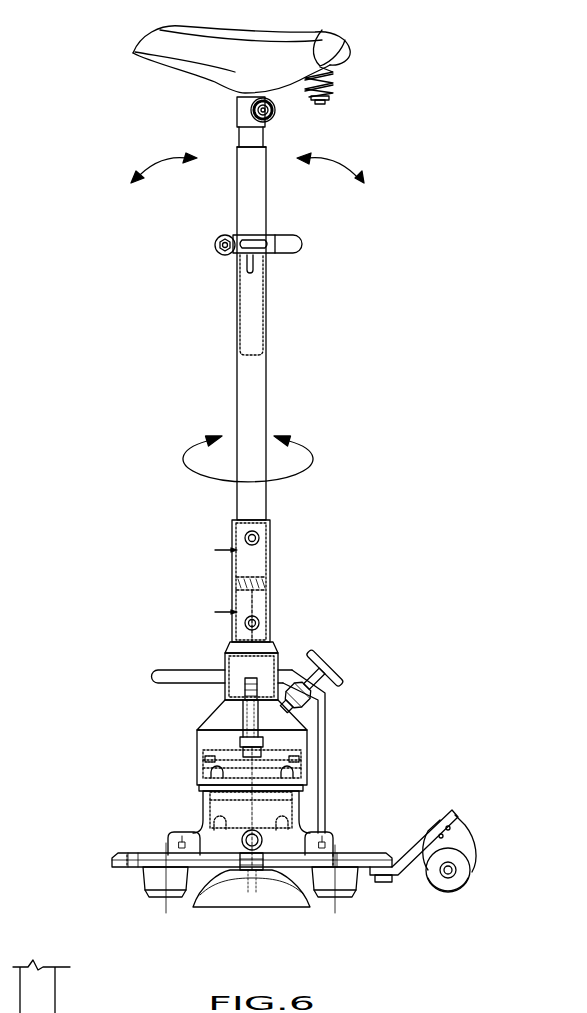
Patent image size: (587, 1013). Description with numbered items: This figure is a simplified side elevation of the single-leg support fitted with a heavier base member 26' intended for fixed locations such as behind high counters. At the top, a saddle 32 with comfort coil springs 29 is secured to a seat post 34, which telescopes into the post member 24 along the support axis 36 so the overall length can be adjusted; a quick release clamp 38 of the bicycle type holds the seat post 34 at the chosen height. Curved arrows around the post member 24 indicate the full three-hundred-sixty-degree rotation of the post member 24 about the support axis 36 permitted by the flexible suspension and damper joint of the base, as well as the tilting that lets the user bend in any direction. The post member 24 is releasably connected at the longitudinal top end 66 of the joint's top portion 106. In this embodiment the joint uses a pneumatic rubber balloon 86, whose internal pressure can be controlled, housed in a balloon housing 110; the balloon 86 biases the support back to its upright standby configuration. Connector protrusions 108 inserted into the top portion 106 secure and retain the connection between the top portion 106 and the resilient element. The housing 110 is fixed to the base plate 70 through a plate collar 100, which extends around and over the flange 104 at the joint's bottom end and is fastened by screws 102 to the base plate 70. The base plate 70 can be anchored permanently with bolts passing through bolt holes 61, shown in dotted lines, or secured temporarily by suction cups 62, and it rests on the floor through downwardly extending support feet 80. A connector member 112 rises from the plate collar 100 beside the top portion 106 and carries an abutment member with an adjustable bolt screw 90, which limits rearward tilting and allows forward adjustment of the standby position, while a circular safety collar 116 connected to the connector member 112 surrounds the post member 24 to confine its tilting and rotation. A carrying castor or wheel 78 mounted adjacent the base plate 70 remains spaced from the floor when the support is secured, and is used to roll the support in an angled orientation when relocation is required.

The saddle 32 is at (330, 53).
The comfort coil springs 29 is at (333, 85).
The seat post 34 is at (262, 213).
The quick release clamp 38 is at (297, 253).
The post member 24 is at (255, 367).
The support axis 36 is at (239, 497).
The longitudinal top end 66 is at (224, 662).
The adjustable bolt screw 90 is at (324, 656).
The circular safety collar 116 is at (153, 677).
The top portion 106 is at (196, 745).
The connector member 112 is at (328, 750).
The connector protrusions 108 is at (300, 775).
The balloon housing 110 is at (199, 805).
The pneumatic rubber balloon 86 is at (210, 818).
The base member 26' is at (130, 768).
The flange 104 is at (307, 832).
The screws 102 is at (344, 850).
The plate collar 100 is at (165, 840).
The bolt holes 61 is at (128, 848).
The base plate 70 is at (112, 857).
The support feet 80 is at (143, 894).
The suction cups 62 is at (298, 893).
The carrying castors or wheels 78 is at (472, 867).